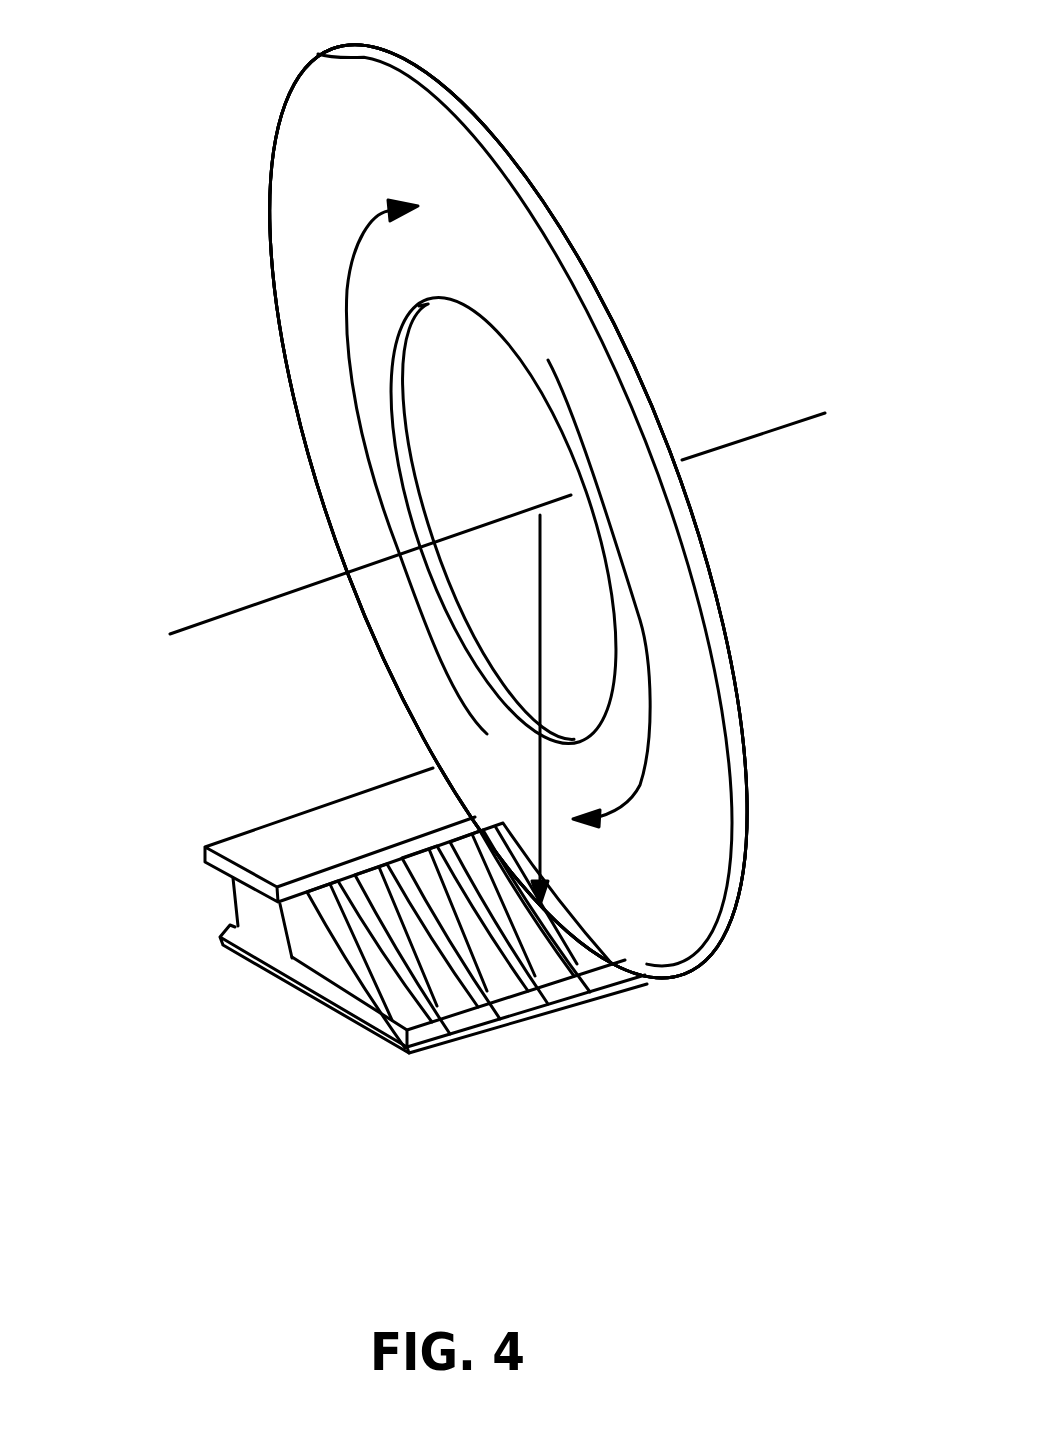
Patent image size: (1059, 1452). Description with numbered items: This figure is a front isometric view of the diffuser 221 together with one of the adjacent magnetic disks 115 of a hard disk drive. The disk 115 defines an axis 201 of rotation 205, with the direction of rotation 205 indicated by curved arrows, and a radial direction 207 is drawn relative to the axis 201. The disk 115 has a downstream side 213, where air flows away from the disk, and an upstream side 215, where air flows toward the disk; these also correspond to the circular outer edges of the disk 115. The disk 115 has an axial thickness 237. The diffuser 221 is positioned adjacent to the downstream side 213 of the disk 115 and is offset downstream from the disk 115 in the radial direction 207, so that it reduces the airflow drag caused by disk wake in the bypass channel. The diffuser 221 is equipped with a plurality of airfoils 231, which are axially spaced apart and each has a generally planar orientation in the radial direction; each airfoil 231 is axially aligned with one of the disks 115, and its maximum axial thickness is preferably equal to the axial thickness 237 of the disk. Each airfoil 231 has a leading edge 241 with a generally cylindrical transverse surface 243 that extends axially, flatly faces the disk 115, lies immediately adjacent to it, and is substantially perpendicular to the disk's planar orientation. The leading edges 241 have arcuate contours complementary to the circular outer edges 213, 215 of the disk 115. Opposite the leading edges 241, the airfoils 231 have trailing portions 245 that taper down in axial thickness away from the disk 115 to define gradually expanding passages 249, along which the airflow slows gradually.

The magnetic disk 115 is at (488, 136).
The axial thickness 237 is at (499, 244).
The upstream side 215 is at (284, 350).
The axis 201 is at (280, 595).
The rotation 205 is at (347, 294).
The radial direction 207 is at (540, 802).
The downstream side 213 is at (424, 749).
The leading edge 241 is at (553, 922).
The diffuser 221 is at (386, 891).
The trailing portion 245 is at (233, 898).
The airfoil 231 is at (315, 956).
The gradually expanding passage 249 is at (409, 855).
The transverse surface 243 is at (545, 967).